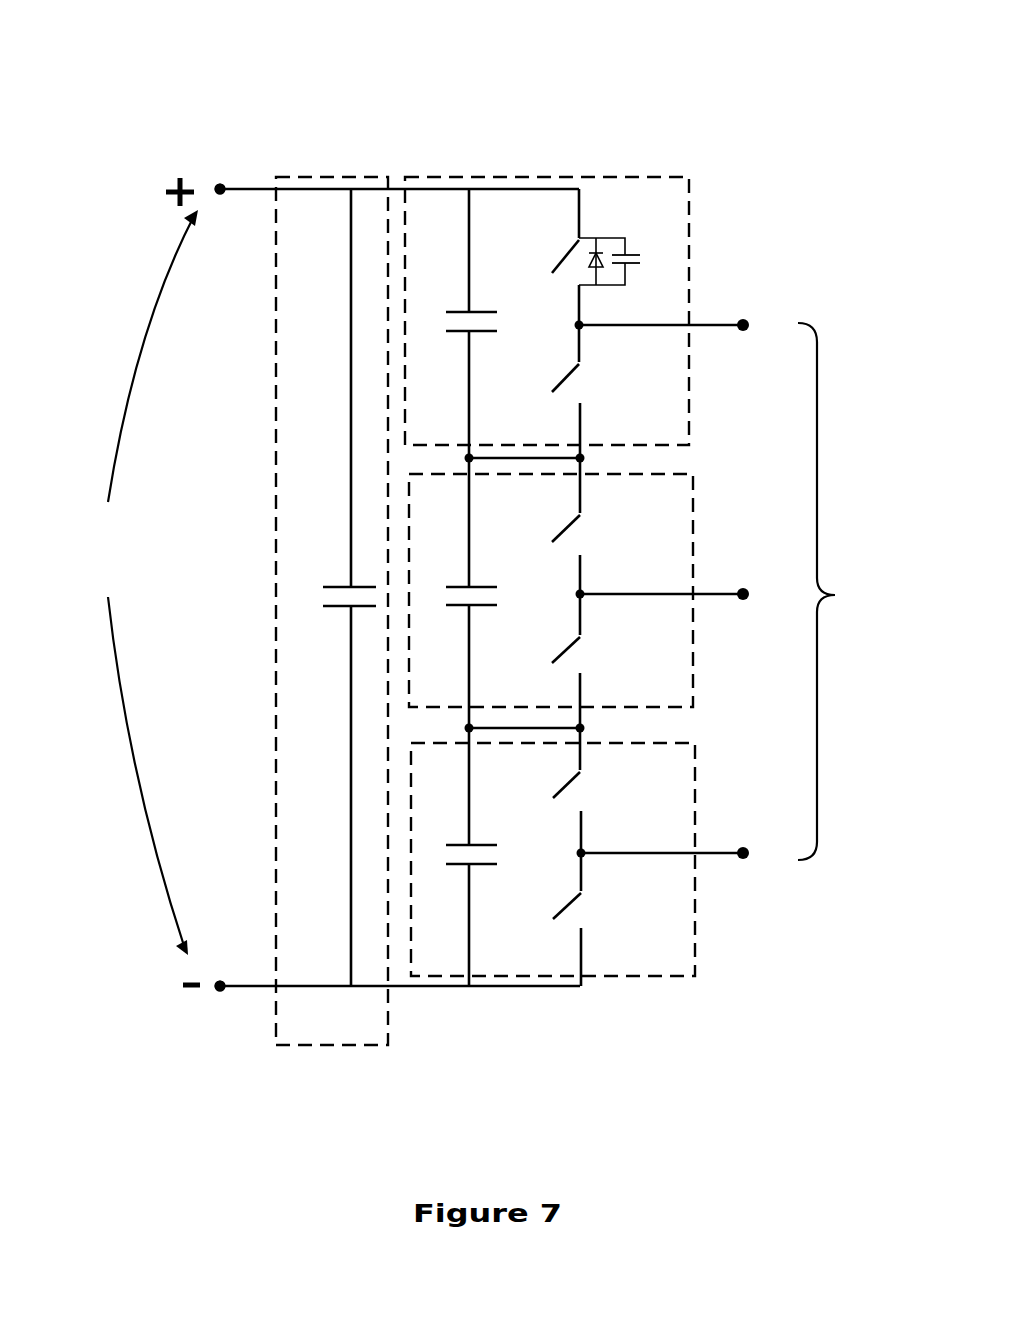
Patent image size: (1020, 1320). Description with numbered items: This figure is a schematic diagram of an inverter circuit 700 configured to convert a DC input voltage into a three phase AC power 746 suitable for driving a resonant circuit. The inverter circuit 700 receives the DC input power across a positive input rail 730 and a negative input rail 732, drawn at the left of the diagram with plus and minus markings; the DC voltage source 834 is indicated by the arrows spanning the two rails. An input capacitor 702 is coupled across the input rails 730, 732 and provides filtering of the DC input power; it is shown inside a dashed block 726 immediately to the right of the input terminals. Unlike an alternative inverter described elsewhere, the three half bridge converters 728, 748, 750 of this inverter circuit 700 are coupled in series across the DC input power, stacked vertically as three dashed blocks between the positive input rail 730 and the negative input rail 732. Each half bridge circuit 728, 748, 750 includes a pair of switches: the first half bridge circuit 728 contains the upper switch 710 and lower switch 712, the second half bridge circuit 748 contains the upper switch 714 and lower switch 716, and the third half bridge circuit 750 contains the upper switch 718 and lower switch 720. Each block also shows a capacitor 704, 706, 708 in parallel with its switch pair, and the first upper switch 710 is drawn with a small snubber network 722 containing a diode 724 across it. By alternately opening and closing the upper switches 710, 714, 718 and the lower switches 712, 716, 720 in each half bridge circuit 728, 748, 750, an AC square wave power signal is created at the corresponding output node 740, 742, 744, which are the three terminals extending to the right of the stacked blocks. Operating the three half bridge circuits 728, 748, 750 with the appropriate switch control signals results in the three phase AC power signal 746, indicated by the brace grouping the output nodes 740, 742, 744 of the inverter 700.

The inverter circuit 700 is at (334, 57).
The input capacitor 702 is at (331, 587).
The first phase capacitor 704 is at (457, 323).
The second phase capacitor 706 is at (457, 593).
The third phase capacitor 708 is at (457, 857).
The upper switch 710 is at (546, 257).
The lower switch 712 is at (546, 391).
The upper switch 714 is at (547, 526).
The lower switch 716 is at (547, 661).
The upper switch 718 is at (548, 790).
The lower switch 720 is at (548, 919).
The snubber circuit 722 is at (627, 255).
The diode 724 is at (599, 250).
The DC link capacitor module 726 is at (308, 177).
The half bridge circuit 728 is at (485, 177).
The positive input rail 730 is at (219, 186).
The negative input rail 732 is at (219, 990).
The output node 740 is at (675, 310).
The output node 742 is at (676, 581).
The output node 744 is at (676, 838).
The three phase AC power 746 is at (841, 591).
The half bridge circuit 748 is at (693, 543).
The half bridge circuit 750 is at (695, 950).
The DC voltage source 834 is at (121, 582).